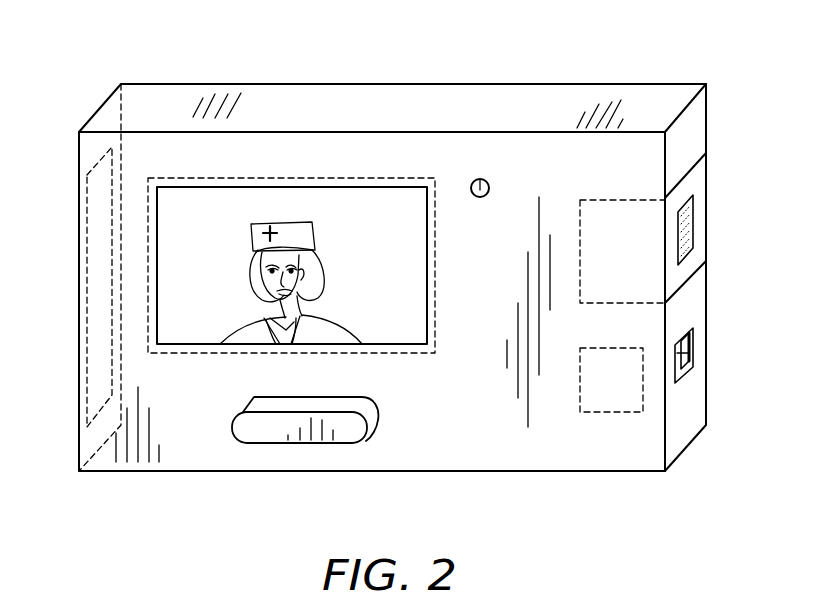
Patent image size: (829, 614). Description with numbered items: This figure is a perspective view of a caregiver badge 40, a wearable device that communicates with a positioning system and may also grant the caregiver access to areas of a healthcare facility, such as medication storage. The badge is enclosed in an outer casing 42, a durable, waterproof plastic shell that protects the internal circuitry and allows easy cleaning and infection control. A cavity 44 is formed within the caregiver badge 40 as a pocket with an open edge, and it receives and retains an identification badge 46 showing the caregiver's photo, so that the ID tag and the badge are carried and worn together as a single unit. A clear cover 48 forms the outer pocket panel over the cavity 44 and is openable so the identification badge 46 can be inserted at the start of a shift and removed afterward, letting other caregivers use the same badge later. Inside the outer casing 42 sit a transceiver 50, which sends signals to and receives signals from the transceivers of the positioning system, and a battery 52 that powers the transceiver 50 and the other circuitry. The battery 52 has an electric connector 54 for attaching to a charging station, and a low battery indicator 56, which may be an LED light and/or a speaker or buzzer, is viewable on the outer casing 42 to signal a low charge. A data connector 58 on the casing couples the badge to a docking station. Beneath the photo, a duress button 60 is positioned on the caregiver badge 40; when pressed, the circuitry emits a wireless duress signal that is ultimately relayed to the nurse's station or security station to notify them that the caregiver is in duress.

The caregiver badge 40 is at (656, 58).
The outer casing 42 is at (272, 98).
The cavity 44 is at (400, 296).
The identification badge 46 is at (175, 311).
The clear cover 48 is at (218, 215).
The transceiver 50 is at (595, 384).
The battery 52 is at (640, 275).
The electric connector 54 is at (686, 230).
The low battery indicator 56 is at (481, 180).
The data connector 58 is at (686, 355).
The duress button 60 is at (290, 427).